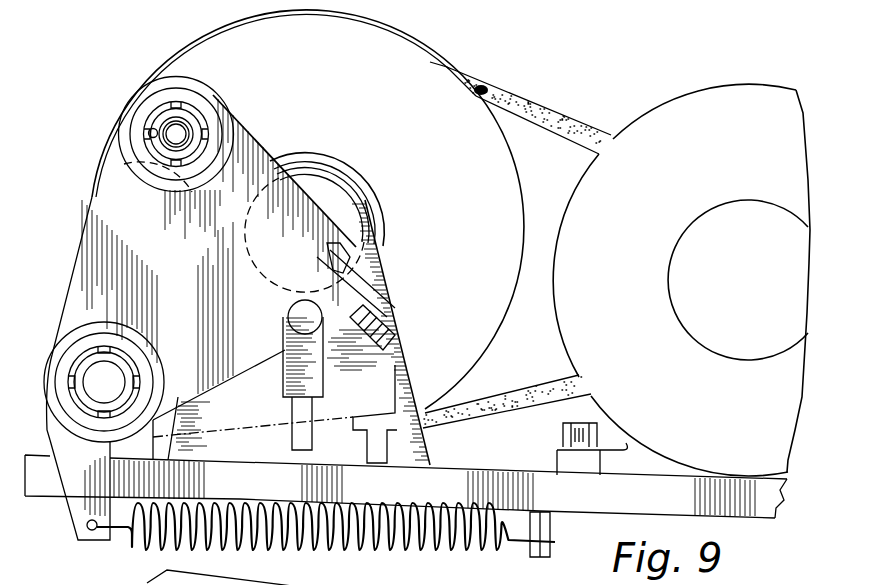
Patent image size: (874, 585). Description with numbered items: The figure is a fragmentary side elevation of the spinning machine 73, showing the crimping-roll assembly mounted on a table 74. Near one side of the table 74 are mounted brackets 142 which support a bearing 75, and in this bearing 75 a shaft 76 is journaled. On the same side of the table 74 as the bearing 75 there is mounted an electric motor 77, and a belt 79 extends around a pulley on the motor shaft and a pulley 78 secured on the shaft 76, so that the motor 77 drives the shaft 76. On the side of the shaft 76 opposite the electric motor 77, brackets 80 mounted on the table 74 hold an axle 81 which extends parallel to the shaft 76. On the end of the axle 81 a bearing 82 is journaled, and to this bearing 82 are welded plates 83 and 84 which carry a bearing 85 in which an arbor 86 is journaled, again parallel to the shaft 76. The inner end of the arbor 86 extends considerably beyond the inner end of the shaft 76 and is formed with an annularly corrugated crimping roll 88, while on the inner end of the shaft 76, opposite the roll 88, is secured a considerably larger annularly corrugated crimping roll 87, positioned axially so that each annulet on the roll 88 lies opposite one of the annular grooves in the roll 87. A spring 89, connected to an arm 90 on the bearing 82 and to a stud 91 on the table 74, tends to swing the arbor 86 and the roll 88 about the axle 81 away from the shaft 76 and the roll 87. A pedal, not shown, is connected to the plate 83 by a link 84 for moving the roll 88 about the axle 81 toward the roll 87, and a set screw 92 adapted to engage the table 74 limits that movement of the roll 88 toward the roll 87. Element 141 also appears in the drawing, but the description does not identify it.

The spinning machine 73 is at (547, 118).
The table 74 is at (757, 505).
The bearing 75 is at (358, 183).
The shaft 76 is at (340, 220).
The electric motor 77 is at (738, 100).
The pulley 78 is at (447, 77).
The belt 79 is at (500, 400).
The brackets 80 is at (137, 450).
The axle 81 is at (93, 373).
The bearing 82 is at (97, 328).
The plate 83 is at (105, 227).
The plate 84 is at (310, 370).
The bearing 85 is at (172, 82).
The arbor 86 is at (170, 135).
The crimping roll 87 is at (330, 177).
The crimping roll 88 is at (186, 119).
The spring 89 is at (470, 557).
The arm 90 is at (80, 503).
The stud 91 is at (550, 525).
The set screw 92 is at (387, 327).
The lever 141 is at (143, 582).
The brackets 142 is at (410, 447).